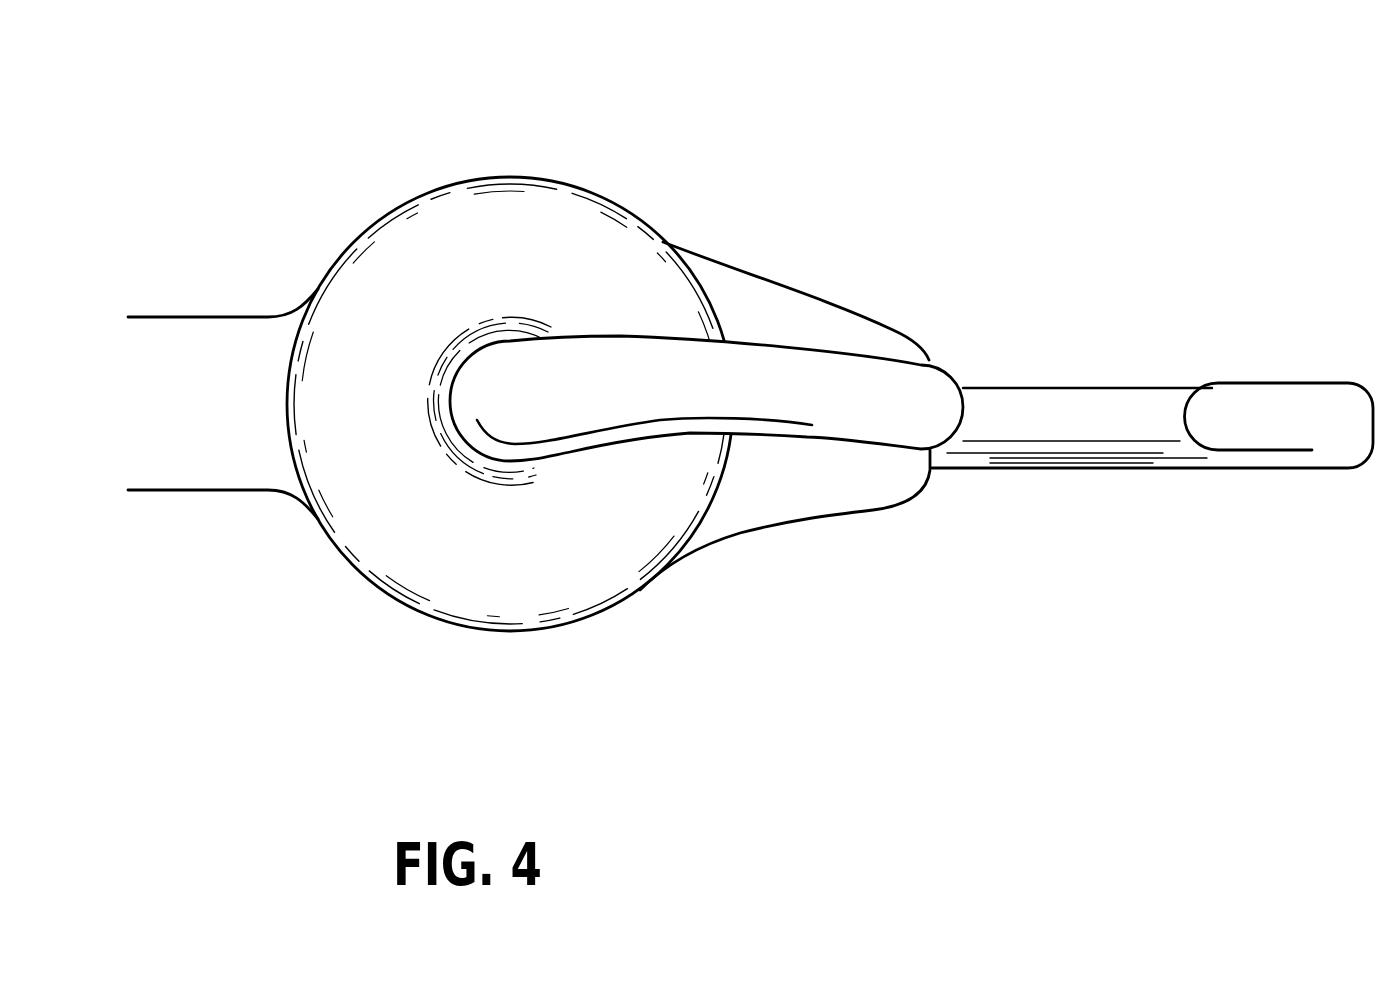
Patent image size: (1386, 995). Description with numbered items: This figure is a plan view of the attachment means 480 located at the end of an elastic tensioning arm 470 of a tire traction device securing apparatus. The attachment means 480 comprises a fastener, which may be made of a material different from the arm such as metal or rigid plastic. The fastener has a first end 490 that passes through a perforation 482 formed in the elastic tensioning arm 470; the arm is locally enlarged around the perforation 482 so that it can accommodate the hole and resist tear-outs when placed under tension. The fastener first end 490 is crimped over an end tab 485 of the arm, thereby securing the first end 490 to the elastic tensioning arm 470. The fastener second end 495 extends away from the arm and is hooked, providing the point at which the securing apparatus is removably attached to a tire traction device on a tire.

The elastic tensioning arm 470 is at (197, 346).
The attachment means 480 is at (750, 327).
The perforation 482 is at (453, 360).
The end tab 485 is at (813, 313).
The fastener first end 490 is at (870, 387).
The fastener second end 495 is at (1290, 398).